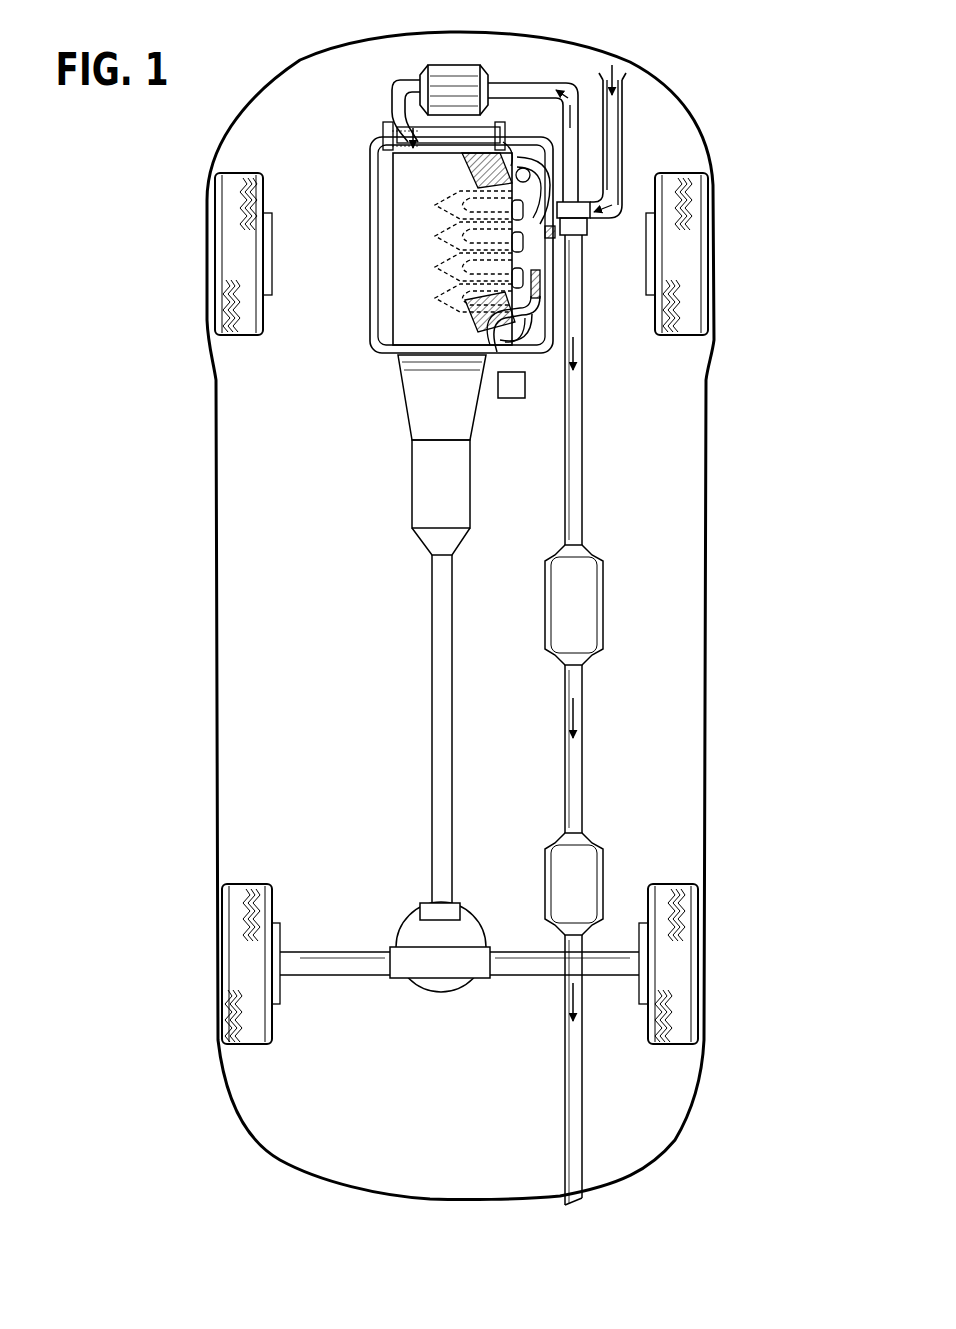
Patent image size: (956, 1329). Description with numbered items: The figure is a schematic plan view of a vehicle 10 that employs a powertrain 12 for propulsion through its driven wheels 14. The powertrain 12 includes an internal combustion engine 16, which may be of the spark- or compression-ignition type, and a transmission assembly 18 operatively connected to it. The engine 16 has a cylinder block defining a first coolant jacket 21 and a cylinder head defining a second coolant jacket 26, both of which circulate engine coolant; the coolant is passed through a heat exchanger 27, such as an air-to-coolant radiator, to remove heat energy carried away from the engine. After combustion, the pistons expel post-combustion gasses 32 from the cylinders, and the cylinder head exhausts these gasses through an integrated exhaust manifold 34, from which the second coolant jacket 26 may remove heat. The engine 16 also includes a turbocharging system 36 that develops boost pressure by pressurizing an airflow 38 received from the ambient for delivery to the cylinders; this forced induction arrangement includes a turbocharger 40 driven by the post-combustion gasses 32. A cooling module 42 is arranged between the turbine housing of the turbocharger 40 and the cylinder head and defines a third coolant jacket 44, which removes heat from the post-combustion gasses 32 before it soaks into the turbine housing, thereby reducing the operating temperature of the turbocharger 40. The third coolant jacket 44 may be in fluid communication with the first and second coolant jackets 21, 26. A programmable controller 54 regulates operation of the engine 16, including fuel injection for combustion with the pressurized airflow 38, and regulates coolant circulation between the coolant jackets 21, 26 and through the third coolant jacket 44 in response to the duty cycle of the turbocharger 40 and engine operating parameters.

The vehicle 10 is at (194, 504).
The powertrain 12 is at (360, 558).
The driven wheels 14 is at (245, 970).
The internal combustion engine 16 is at (392, 237).
The transmission assembly 18 is at (456, 514).
The first coolant jacket 21 is at (465, 157).
The second coolant jacket 26 is at (442, 204).
The heat exchanger 27 is at (481, 136).
The post-combustion gasses 32 is at (578, 352).
The exhaust manifold 34 is at (541, 226).
The turbocharging system 36 is at (657, 146).
The airflow 38 is at (572, 133).
The turbocharger 40 is at (594, 242).
The cooling module 42 is at (530, 325).
The third coolant jacket 44 is at (530, 293).
The programmable controller 54 is at (497, 352).